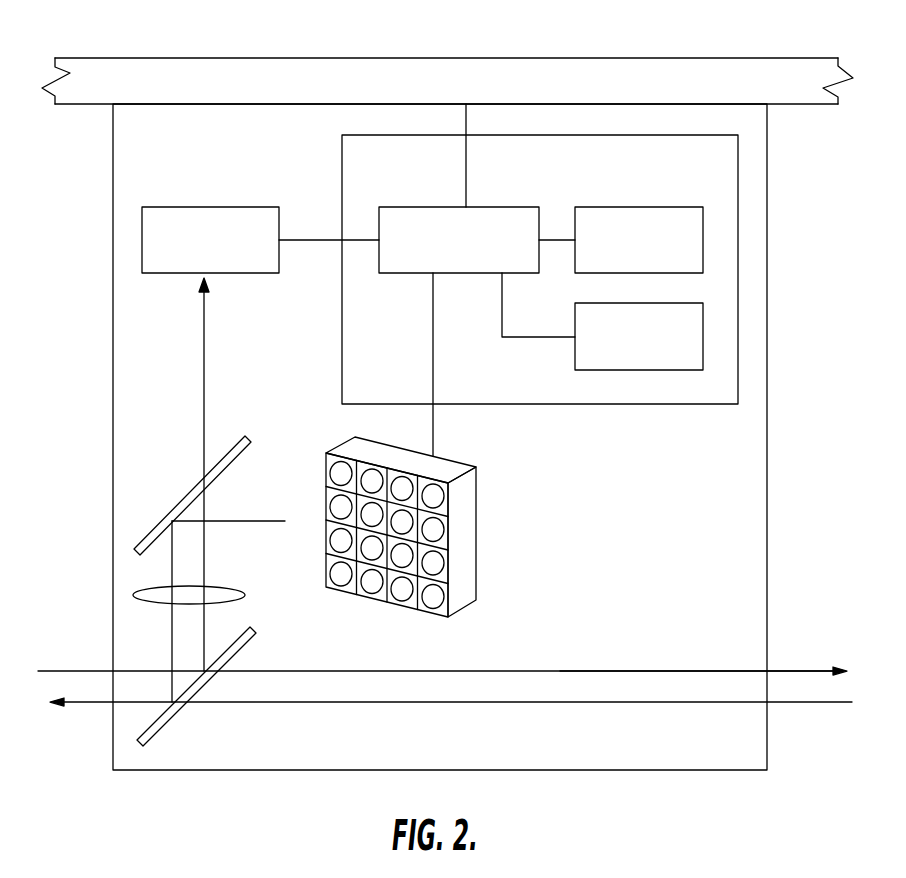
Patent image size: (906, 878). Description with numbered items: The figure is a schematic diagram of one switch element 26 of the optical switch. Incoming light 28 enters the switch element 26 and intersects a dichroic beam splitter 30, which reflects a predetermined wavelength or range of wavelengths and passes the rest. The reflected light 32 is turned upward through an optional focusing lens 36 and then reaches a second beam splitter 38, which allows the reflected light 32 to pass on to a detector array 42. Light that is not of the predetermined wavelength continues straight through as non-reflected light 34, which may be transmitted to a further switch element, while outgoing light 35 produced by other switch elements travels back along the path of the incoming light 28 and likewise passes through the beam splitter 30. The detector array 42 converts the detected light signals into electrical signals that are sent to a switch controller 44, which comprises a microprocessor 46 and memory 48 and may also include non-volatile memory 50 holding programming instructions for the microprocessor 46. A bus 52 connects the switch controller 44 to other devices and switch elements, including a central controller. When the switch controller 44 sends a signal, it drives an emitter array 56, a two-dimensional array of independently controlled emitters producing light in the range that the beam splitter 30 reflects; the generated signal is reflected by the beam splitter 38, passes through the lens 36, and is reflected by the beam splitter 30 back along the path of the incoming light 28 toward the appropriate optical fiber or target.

The switch element 26 is at (667, 544).
The incoming light 28 is at (62, 671).
The beam splitter 30 is at (152, 733).
The reflected light 32 is at (205, 640).
The non-reflected light 34 is at (640, 671).
The outgoing light 35 is at (717, 703).
The focusing lens 36 is at (218, 587).
The beam splitter 38 is at (185, 497).
The detector array 42 is at (211, 207).
The switch controller 44 is at (660, 405).
The microprocessor 46 is at (406, 273).
The memory 48 is at (587, 275).
The non-volatile memory 50 is at (653, 351).
The bus 52 is at (343, 57).
The emitter array 56 is at (477, 563).